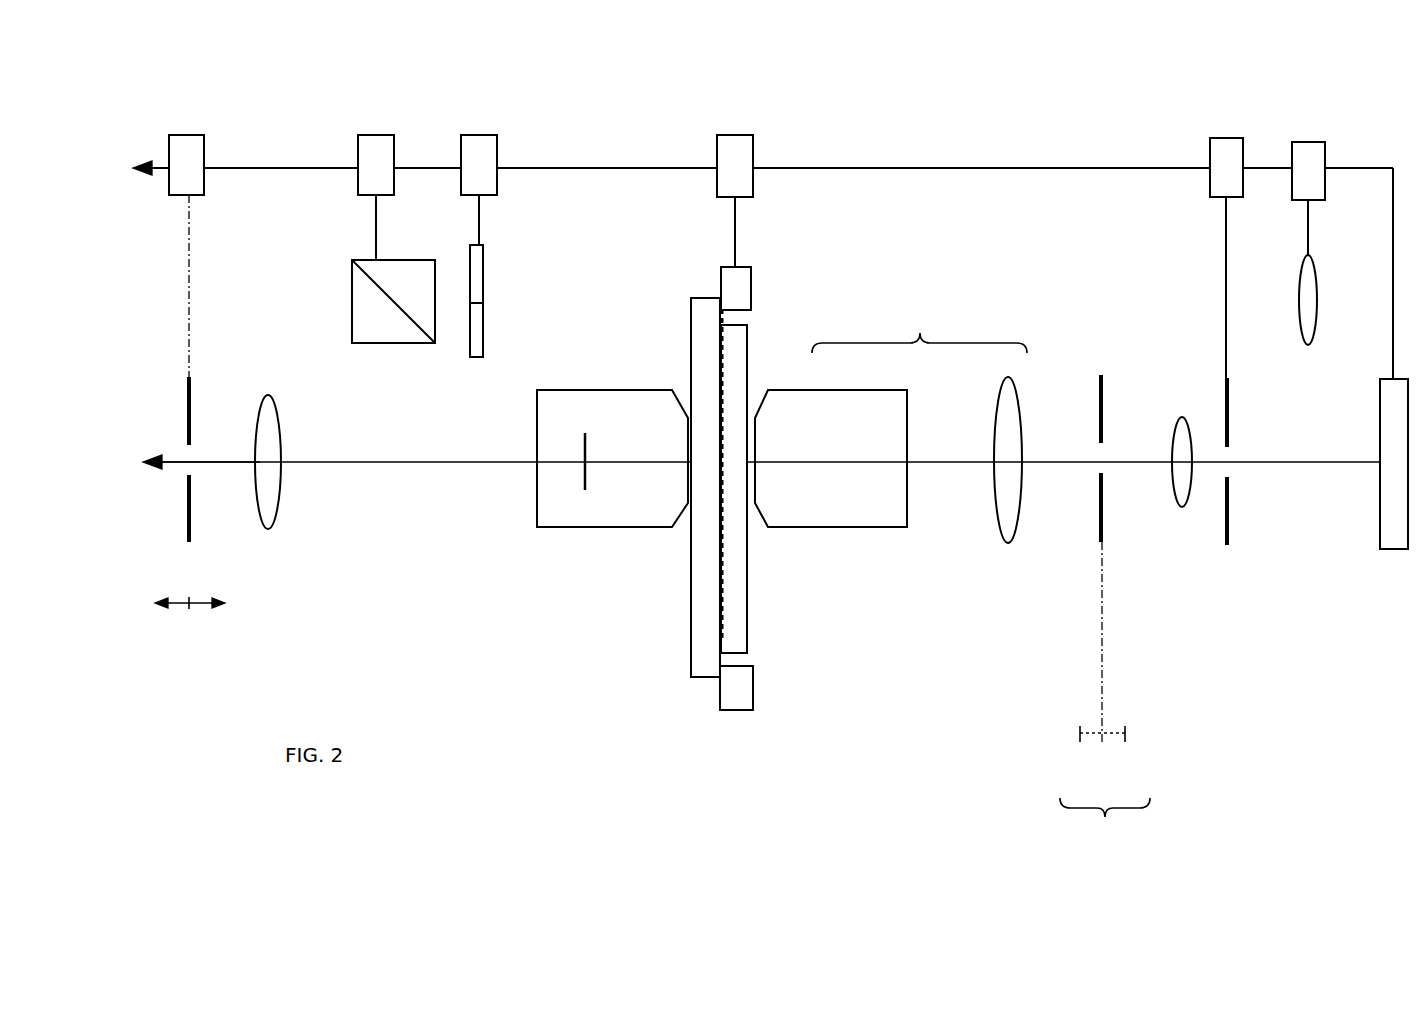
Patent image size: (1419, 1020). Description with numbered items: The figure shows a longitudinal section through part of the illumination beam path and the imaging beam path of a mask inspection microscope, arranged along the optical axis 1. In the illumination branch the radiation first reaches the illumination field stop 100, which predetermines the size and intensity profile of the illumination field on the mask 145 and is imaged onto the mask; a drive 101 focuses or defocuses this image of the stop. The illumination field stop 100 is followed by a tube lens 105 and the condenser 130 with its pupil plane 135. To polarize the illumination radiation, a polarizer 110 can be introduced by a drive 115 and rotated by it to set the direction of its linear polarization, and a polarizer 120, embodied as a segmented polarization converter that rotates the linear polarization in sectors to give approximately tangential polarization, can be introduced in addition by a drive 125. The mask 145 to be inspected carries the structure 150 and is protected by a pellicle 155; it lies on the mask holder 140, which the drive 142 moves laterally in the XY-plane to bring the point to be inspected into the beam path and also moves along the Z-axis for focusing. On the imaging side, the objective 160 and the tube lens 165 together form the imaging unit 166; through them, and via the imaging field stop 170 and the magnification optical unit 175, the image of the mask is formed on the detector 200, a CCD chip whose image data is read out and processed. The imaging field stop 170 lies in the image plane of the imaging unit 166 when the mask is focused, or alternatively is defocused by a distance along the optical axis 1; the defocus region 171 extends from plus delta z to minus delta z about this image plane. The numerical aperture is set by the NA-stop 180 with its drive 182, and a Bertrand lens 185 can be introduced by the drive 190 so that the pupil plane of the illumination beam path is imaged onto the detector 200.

The optical axis 1 is at (168, 455).
The illumination field stop 100 is at (189, 540).
The drive 101 is at (185, 135).
The tube lens 105 is at (270, 512).
The polarizer 110 is at (353, 300).
The drive 115 is at (379, 135).
The polarizer 120 is at (483, 280).
The drive 125 is at (478, 135).
The condenser 130 is at (547, 497).
The pupil plane 135 is at (585, 490).
The mask holder 140 is at (750, 292).
The drive 142 is at (738, 135).
The mask 145 is at (700, 663).
The structure 150 is at (720, 576).
The pellicle 155 is at (748, 620).
The objective 160 is at (877, 517).
The tube lens 165 is at (1008, 545).
The imaging unit 166 is at (919, 330).
The imaging field stop 170 is at (1101, 375).
The defocus region 171 is at (1105, 695).
The magnification optical unit 175 is at (1182, 508).
The NA-stop 180 is at (1229, 545).
The drive 182 is at (1225, 139).
The Bertrand lens 185 is at (1318, 290).
The drive 190 is at (1322, 152).
The detector 200 is at (1396, 550).